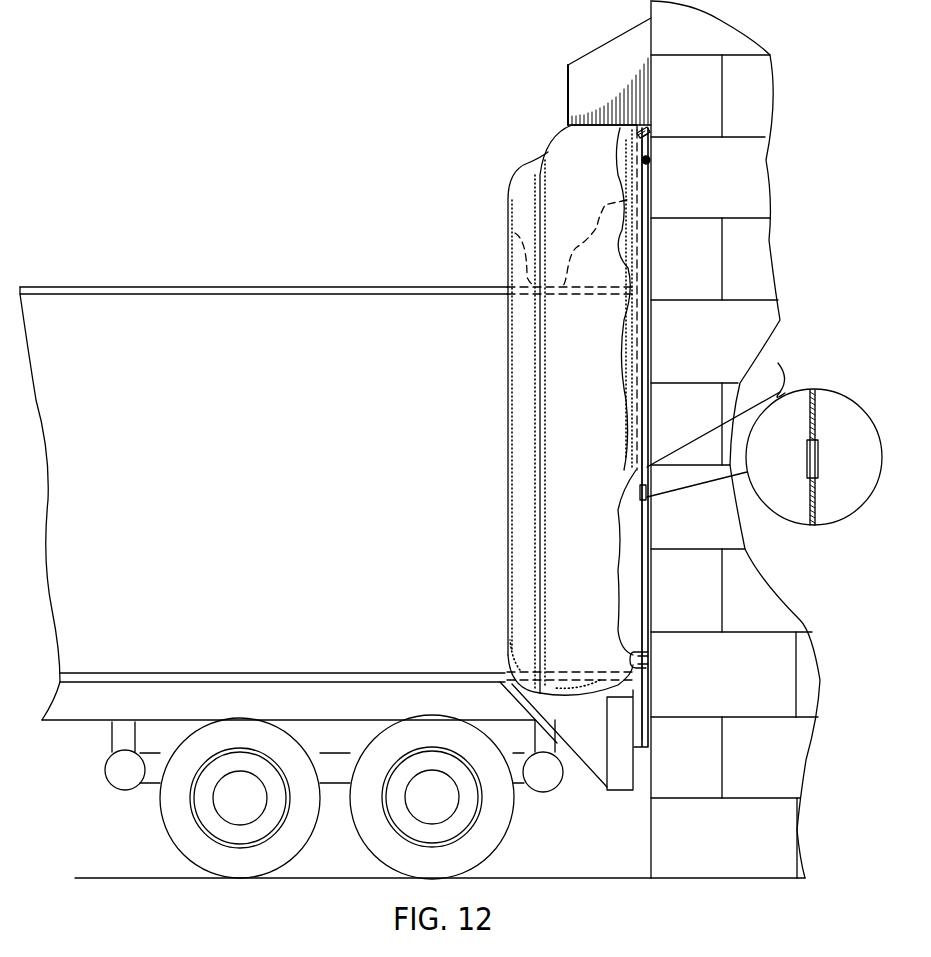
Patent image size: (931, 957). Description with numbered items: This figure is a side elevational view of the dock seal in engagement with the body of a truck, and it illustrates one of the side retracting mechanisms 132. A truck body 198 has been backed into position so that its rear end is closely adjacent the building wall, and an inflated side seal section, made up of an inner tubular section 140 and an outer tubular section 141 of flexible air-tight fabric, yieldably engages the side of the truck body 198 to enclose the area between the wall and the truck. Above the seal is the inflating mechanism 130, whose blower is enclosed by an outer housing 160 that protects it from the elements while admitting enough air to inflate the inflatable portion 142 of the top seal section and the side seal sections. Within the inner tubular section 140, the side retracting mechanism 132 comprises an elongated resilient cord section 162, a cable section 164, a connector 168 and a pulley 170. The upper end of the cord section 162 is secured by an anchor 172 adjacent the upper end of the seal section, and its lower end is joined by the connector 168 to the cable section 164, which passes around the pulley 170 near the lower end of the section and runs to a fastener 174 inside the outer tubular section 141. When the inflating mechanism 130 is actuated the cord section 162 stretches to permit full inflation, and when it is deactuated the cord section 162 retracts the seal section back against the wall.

The inflating mechanism 130 is at (600, 63).
The outer housing 160 is at (577, 80).
The inner tubular section 140 is at (630, 401).
The outer tubular section 141 is at (515, 190).
The inflatable portion 142 is at (594, 351).
The anchor 172 is at (652, 160).
The cord section 162 is at (670, 495).
The cable section 164 is at (815, 505).
The connector 168 is at (650, 500).
The side retracting mechanism 132 is at (652, 587).
The pulley 170 is at (650, 650).
The truck body 198 is at (310, 287).
The fastener 174 is at (567, 780).